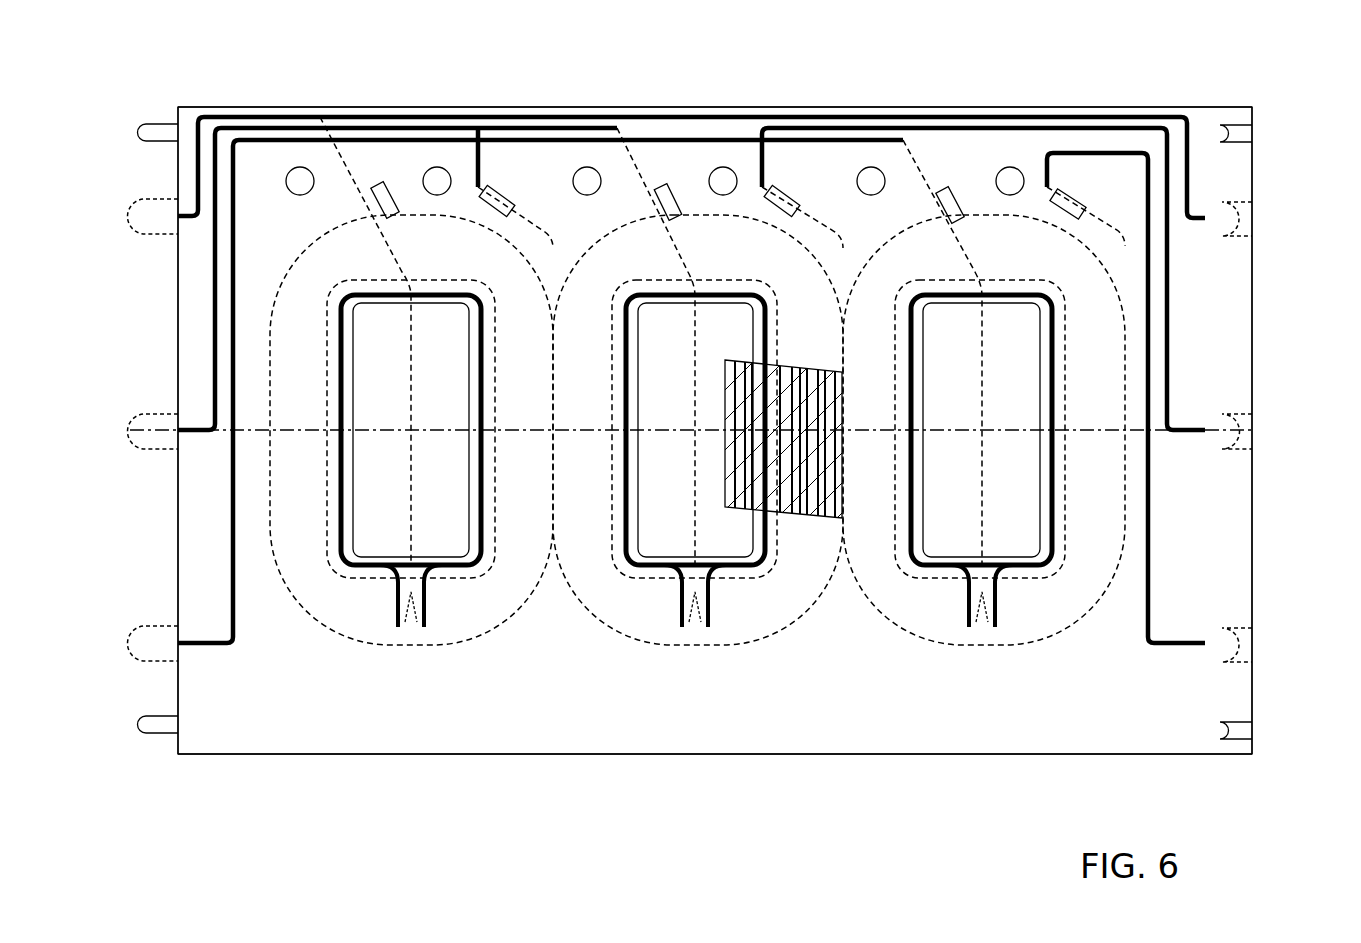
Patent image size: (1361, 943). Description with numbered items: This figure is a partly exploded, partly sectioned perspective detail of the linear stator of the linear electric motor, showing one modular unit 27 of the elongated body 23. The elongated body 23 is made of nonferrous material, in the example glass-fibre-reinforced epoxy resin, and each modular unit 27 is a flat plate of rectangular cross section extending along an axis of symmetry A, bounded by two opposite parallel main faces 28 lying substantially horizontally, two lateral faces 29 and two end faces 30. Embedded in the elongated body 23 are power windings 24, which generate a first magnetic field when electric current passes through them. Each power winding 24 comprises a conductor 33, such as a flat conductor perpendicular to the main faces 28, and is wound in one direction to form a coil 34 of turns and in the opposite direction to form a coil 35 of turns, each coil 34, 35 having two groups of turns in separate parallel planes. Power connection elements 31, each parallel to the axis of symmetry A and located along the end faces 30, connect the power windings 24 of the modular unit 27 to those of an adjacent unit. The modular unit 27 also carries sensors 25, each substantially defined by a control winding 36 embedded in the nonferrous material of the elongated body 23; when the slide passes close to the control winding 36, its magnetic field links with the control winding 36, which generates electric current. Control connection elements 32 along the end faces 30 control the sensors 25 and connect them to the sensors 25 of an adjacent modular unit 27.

The elongated body 23 is at (1082, 85).
The power winding 24 is at (412, 648).
The sensor 25 is at (378, 580).
The modular unit 27 is at (688, 93).
The main face 28 is at (1133, 172).
The lateral face 29 is at (957, 106).
The end face 30 is at (172, 301).
The power connection element 31 is at (160, 212).
The control connection element 32 is at (152, 124).
The conductor 33 is at (812, 522).
The coil 34 is at (535, 640).
The coil 35 is at (298, 645).
The control winding 36 is at (432, 288).
The axis of symmetry A is at (1255, 430).